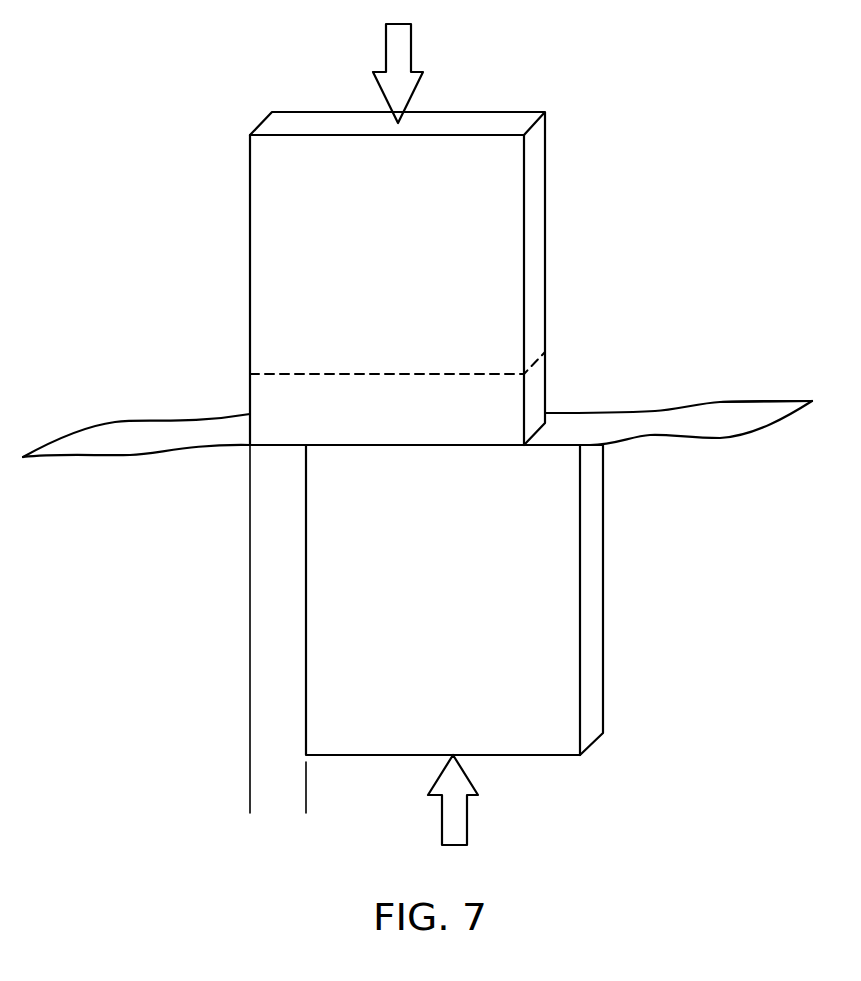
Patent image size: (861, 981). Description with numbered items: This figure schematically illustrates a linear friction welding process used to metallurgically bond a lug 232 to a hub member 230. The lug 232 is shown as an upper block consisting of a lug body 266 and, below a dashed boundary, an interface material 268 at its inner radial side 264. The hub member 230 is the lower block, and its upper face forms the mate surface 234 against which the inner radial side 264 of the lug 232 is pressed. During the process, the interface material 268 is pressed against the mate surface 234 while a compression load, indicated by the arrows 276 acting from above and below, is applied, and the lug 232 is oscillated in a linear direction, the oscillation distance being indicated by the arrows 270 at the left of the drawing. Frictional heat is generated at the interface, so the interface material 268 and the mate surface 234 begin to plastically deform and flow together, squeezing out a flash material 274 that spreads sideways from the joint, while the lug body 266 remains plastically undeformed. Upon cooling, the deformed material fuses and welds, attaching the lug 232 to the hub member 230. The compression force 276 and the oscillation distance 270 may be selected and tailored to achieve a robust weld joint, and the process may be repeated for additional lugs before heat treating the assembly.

The hub member 230 is at (620, 556).
The lug 232 is at (356, 278).
The mate surface 234 is at (572, 421).
The inner radial side 264 is at (279, 448).
The lug body 266 is at (412, 218).
The interface material 268 is at (413, 426).
The oscillation distance 270 is at (340, 812).
The flash material 274 is at (730, 419).
The compression force 276 is at (408, 37).